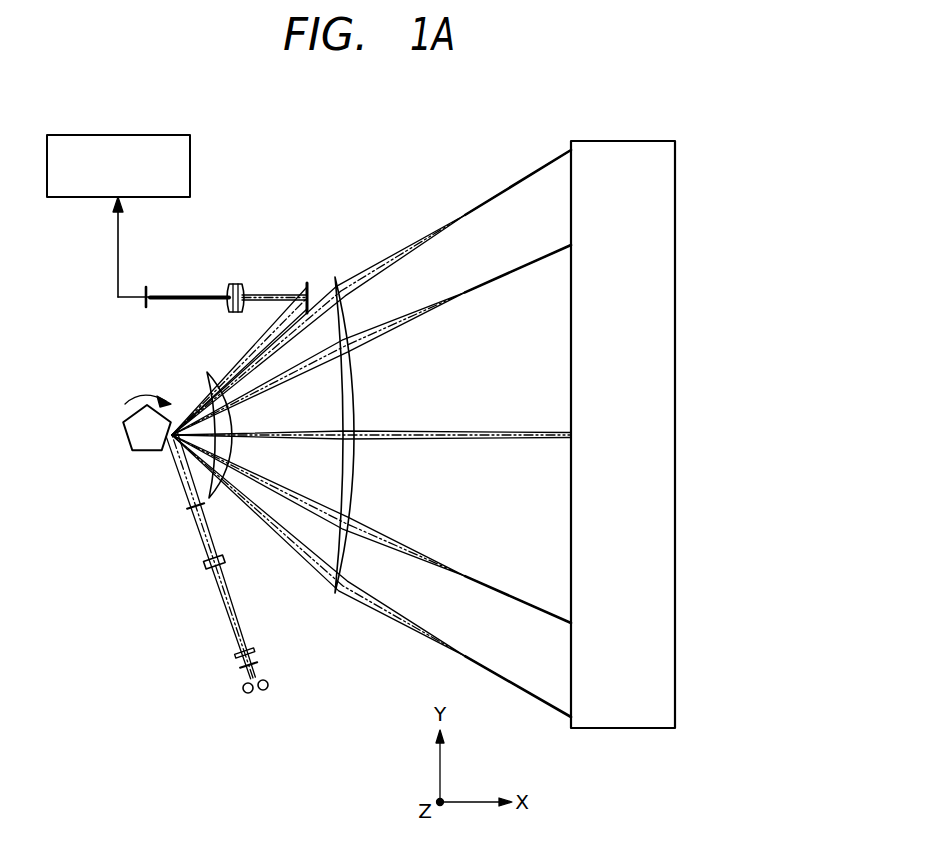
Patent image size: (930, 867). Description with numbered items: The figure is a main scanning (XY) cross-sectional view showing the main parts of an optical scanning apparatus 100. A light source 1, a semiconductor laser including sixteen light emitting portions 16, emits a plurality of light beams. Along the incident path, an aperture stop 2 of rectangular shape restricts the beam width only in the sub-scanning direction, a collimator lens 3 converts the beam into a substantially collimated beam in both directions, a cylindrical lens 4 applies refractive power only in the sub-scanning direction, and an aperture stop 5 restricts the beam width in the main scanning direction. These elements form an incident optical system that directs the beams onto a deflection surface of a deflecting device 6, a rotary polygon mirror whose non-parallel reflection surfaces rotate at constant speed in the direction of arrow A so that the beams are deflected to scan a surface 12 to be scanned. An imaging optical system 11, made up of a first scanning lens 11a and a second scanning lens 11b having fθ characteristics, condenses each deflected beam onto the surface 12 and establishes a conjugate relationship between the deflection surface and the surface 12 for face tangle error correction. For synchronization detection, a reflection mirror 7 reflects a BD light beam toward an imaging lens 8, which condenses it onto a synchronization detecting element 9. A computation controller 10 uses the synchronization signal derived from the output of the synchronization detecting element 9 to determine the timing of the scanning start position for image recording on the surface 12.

The optical scanning apparatus 100 is at (416, 103).
The light source 1 is at (263, 692).
The light emitting portion 16 is at (245, 692).
The aperture stop 2 is at (243, 668).
The collimator lens 3 is at (236, 657).
The cylindrical lens 4 is at (204, 564).
The aperture stop 5 is at (189, 508).
The deflecting device 6 is at (126, 436).
The reflection mirror 7 is at (307, 283).
The imaging lens 8 is at (236, 284).
The synchronization detecting element 9 is at (147, 289).
The computation controller 10 is at (163, 135).
The imaging optical system 11 is at (52, 283).
The first scanning lens 11a is at (208, 374).
The second scanning lens 11b is at (340, 326).
The surface to be scanned 12 is at (571, 176).